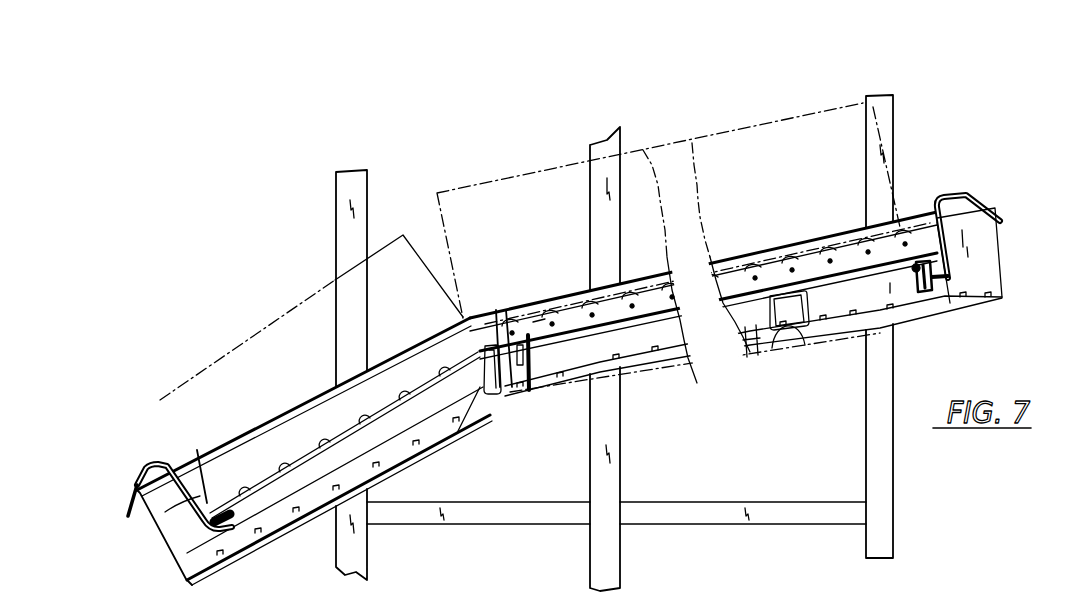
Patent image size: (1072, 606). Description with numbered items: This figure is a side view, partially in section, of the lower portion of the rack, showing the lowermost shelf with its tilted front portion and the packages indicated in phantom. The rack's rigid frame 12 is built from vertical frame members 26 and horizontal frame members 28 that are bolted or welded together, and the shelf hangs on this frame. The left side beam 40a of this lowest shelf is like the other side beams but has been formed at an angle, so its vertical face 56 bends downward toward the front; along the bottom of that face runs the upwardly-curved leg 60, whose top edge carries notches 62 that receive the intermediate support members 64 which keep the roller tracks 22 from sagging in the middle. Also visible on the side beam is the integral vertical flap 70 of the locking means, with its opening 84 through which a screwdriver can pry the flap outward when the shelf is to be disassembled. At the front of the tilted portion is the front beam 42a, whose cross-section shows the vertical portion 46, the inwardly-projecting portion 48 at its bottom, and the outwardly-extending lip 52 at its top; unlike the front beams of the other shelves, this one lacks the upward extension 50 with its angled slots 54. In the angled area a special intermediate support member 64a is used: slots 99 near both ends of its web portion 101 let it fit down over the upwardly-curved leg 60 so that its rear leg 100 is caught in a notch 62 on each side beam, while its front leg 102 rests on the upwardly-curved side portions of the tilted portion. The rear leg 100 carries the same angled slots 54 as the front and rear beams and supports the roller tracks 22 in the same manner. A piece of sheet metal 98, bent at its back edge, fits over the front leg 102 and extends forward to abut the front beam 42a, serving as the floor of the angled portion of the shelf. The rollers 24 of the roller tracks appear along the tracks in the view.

The frame 12 is at (903, 99).
The roller tracks 22 is at (690, 300).
The rollers 24 is at (563, 297).
The vertical frame members 26 is at (367, 187).
The horizontal frame members 28 is at (770, 502).
The left side beam 40a is at (173, 553).
The front beam 42a is at (157, 463).
The vertical portion 46 is at (186, 507).
The inwardly-projecting portion 48 is at (943, 303).
The upward extension 50 is at (890, 288).
The outwardly-extending lip 52 is at (127, 500).
The angled slots 54 is at (537, 320).
The vertical face 56 is at (697, 365).
The upwardly-curved leg 60 is at (257, 537).
The notches 62 is at (299, 492).
The intermediate support members 64 is at (838, 327).
The special intermediate support member 64a is at (483, 382).
The vertical flap 70 is at (258, 480).
The opening 84 is at (201, 478).
The sheet metal 98 is at (378, 413).
The slots 99 is at (527, 395).
The rear leg 100 is at (533, 350).
The web portion 101 is at (523, 368).
The front leg 102 is at (457, 433).